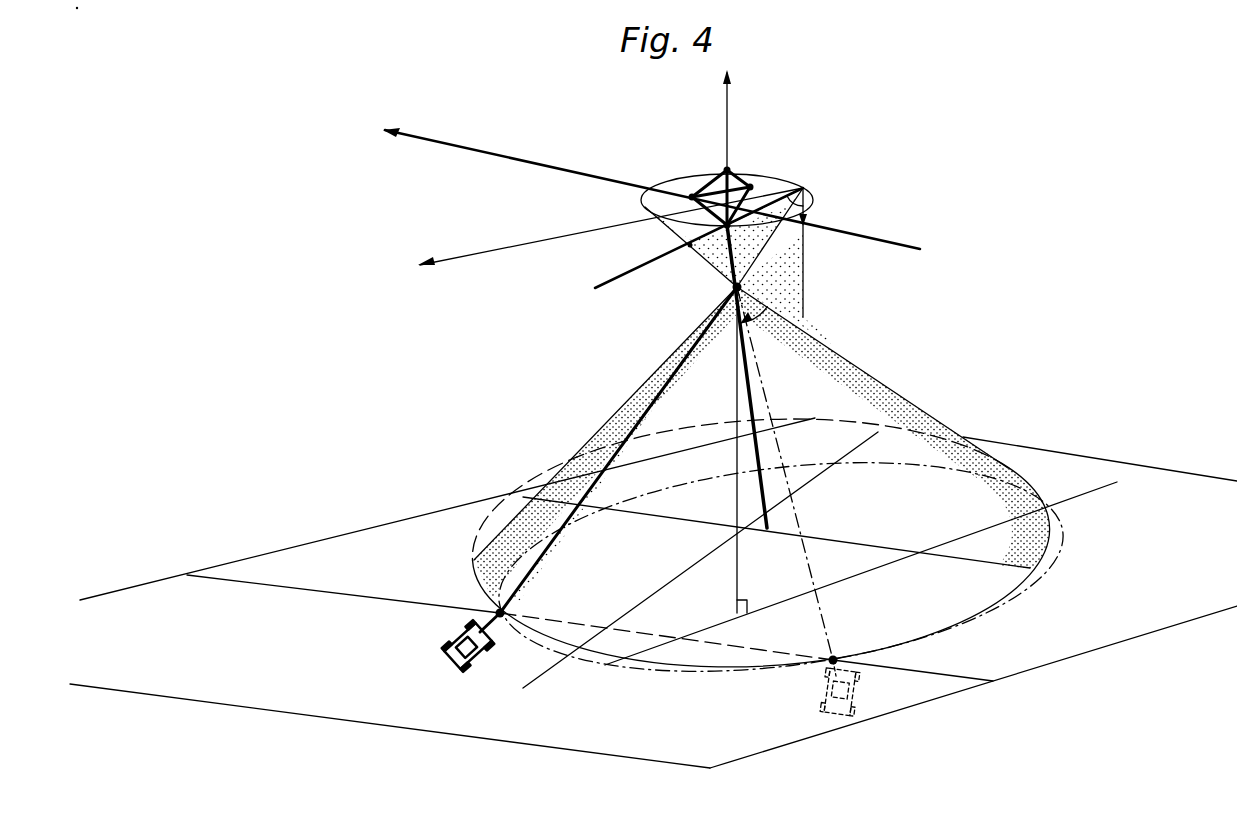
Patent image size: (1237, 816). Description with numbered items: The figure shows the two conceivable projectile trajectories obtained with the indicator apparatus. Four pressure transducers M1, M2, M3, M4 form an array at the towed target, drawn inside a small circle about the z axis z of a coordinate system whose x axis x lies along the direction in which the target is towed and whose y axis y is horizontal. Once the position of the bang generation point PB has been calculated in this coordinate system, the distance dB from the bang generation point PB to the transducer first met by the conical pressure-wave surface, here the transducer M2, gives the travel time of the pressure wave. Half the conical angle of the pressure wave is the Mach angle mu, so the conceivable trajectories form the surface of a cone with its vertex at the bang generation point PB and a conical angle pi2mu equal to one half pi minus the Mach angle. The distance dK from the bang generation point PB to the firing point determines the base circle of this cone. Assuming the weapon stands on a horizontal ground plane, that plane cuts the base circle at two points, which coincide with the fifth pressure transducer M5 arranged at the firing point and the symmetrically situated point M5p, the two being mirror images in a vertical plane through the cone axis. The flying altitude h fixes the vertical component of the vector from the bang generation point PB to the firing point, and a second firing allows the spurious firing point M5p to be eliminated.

The pressure transducer M1 is at (692, 195).
The pressure transducer M2 is at (690, 245).
The pressure transducer M3 is at (750, 185).
The pressure transducer M4 is at (728, 168).
The fifth pressure transducer M5 is at (502, 611).
The firing point M5p is at (833, 658).
The bang generation point PB is at (735, 288).
The distance dB is at (772, 262).
The distance dK is at (658, 401).
The flying altitude h is at (736, 452).
The Mach angle mu is at (801, 202).
The conical angle pi2mu is at (772, 321).
The x axis x is at (645, 176).
The y axis y is at (610, 226).
The z axis z is at (737, 147).